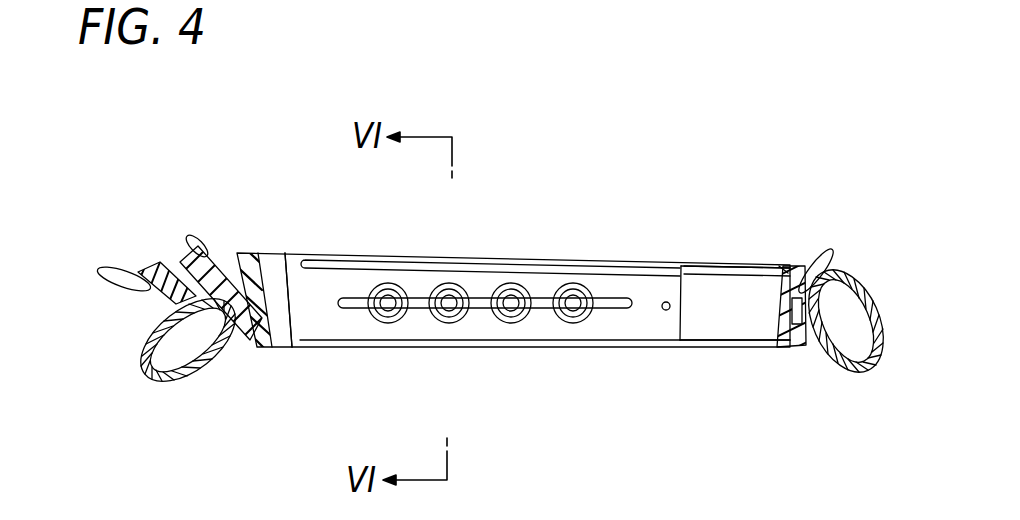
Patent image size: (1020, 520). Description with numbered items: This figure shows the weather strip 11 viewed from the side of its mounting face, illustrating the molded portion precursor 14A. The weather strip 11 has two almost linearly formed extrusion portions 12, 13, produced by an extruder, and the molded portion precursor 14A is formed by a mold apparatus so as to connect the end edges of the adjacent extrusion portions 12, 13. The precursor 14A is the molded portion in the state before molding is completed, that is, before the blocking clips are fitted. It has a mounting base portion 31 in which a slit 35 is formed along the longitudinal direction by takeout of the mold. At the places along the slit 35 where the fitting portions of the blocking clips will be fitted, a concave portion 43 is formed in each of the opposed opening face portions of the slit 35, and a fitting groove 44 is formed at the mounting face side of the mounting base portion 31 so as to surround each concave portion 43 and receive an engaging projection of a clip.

The weather strip 11 is at (679, 184).
The extrusion portion 12 is at (185, 382).
The extrusion portion 13 is at (853, 372).
The molded portion precursor 14A is at (320, 343).
The mounting base portion 31 is at (720, 328).
The slit 35 is at (620, 310).
The concave portion 43 is at (405, 350).
The fitting groove 44 is at (367, 350).